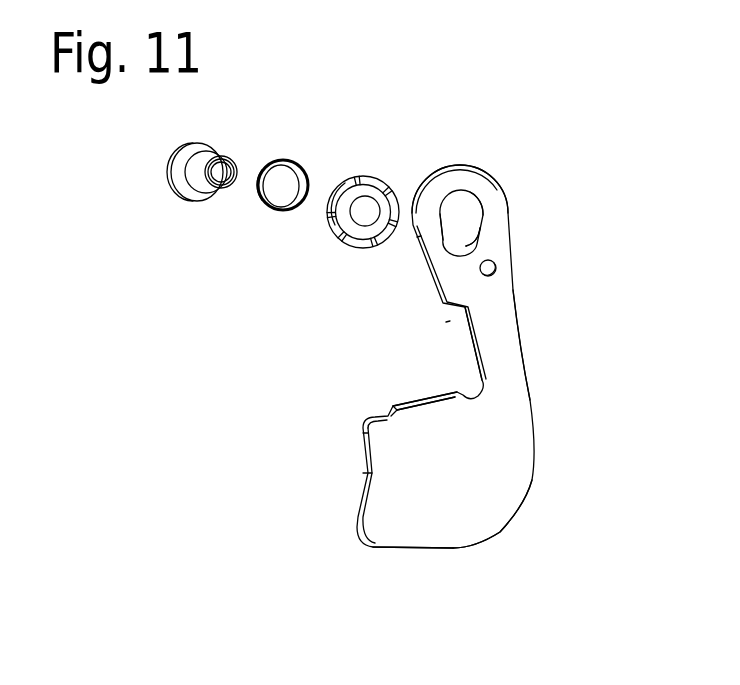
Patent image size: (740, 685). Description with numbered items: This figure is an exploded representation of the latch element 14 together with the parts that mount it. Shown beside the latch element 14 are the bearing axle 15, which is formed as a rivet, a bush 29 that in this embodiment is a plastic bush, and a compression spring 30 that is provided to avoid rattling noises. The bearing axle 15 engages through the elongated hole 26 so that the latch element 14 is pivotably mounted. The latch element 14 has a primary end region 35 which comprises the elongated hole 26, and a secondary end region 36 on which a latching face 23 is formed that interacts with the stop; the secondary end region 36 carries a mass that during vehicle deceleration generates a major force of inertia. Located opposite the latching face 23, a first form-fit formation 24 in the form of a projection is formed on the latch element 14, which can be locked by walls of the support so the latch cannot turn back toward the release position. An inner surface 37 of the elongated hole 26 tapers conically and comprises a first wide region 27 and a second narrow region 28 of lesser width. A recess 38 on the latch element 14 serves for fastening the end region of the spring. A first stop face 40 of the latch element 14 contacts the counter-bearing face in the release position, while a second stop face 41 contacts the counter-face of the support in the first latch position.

The latch element 14 is at (515, 401).
The bearing axle 15 is at (208, 143).
The latching face 23 is at (418, 573).
The first form-fit formation 24 is at (412, 397).
The elongated hole 26 is at (465, 203).
The first wide region 27 is at (497, 203).
The second narrow region 28 is at (447, 246).
The bush 29 is at (297, 163).
The compression spring 30 is at (380, 178).
The primary end region 35 is at (462, 163).
The secondary end region 36 is at (493, 497).
The inner surface 37 is at (465, 228).
The recess 38 is at (480, 272).
The first stop face 40 is at (520, 312).
The second stop face 41 is at (473, 342).